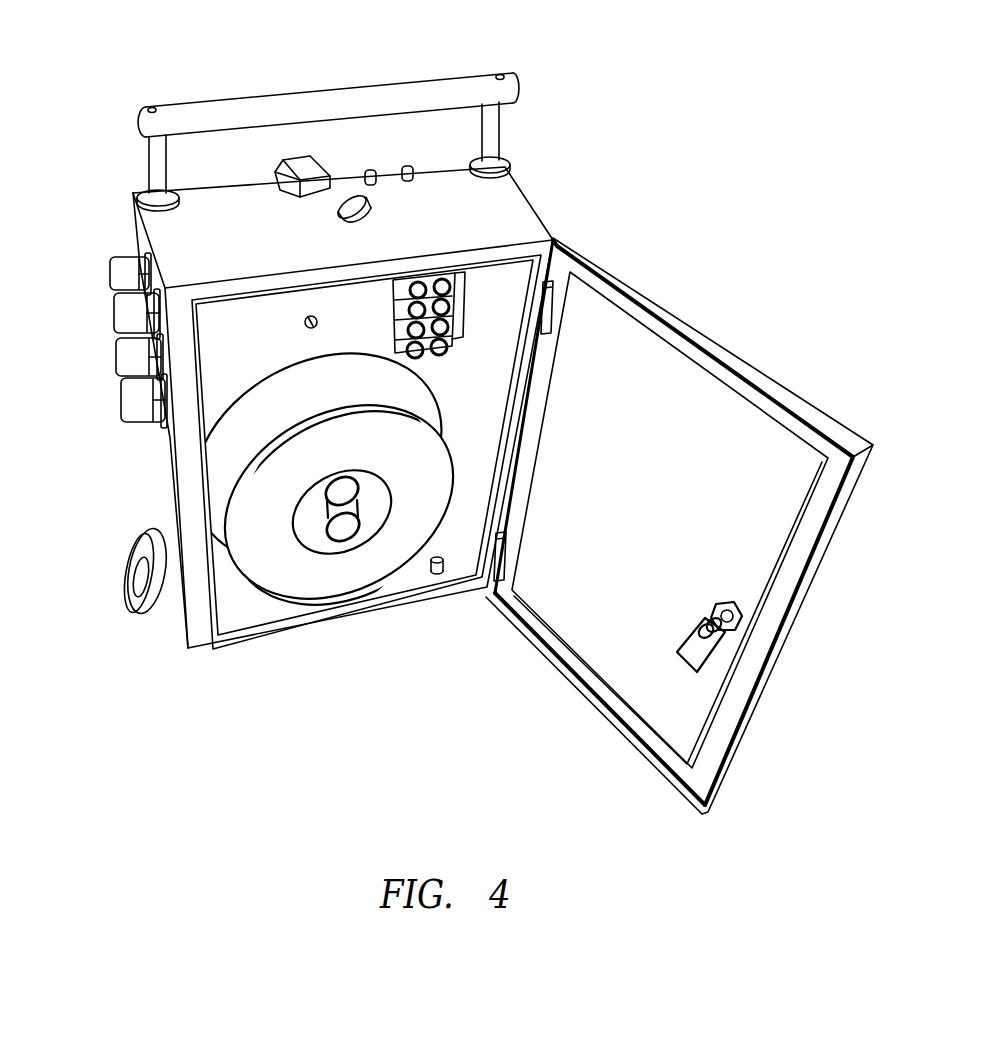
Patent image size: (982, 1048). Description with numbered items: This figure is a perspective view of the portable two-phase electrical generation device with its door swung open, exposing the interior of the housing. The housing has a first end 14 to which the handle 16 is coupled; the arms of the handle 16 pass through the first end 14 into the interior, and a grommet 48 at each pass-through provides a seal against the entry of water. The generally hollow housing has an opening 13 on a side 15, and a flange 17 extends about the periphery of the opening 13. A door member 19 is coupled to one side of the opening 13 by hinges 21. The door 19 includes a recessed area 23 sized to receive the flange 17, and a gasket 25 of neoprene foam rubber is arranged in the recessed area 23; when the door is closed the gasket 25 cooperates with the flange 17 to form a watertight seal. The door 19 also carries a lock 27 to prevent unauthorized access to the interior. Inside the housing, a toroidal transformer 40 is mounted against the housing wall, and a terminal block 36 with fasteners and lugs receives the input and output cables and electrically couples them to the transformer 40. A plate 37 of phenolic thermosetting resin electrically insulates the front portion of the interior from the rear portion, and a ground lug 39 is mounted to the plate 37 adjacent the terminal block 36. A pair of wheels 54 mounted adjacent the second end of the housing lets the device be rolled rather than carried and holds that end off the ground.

The opening 13 is at (213, 418).
The first end 14 is at (513, 188).
The side 15 is at (560, 246).
The handle 16 is at (457, 84).
The flange 17 is at (197, 375).
The door member 19 is at (679, 527).
The hinges 21 is at (552, 305).
The recessed area 23 is at (698, 390).
The gasket 25 is at (693, 788).
The lock 27 is at (737, 633).
The terminal block 36 is at (457, 320).
The plate 37 is at (213, 332).
The ground lug 39 is at (311, 315).
The toroidal transformer 40 is at (283, 583).
The grommet 48 is at (140, 200).
The wheels 54 is at (123, 533).